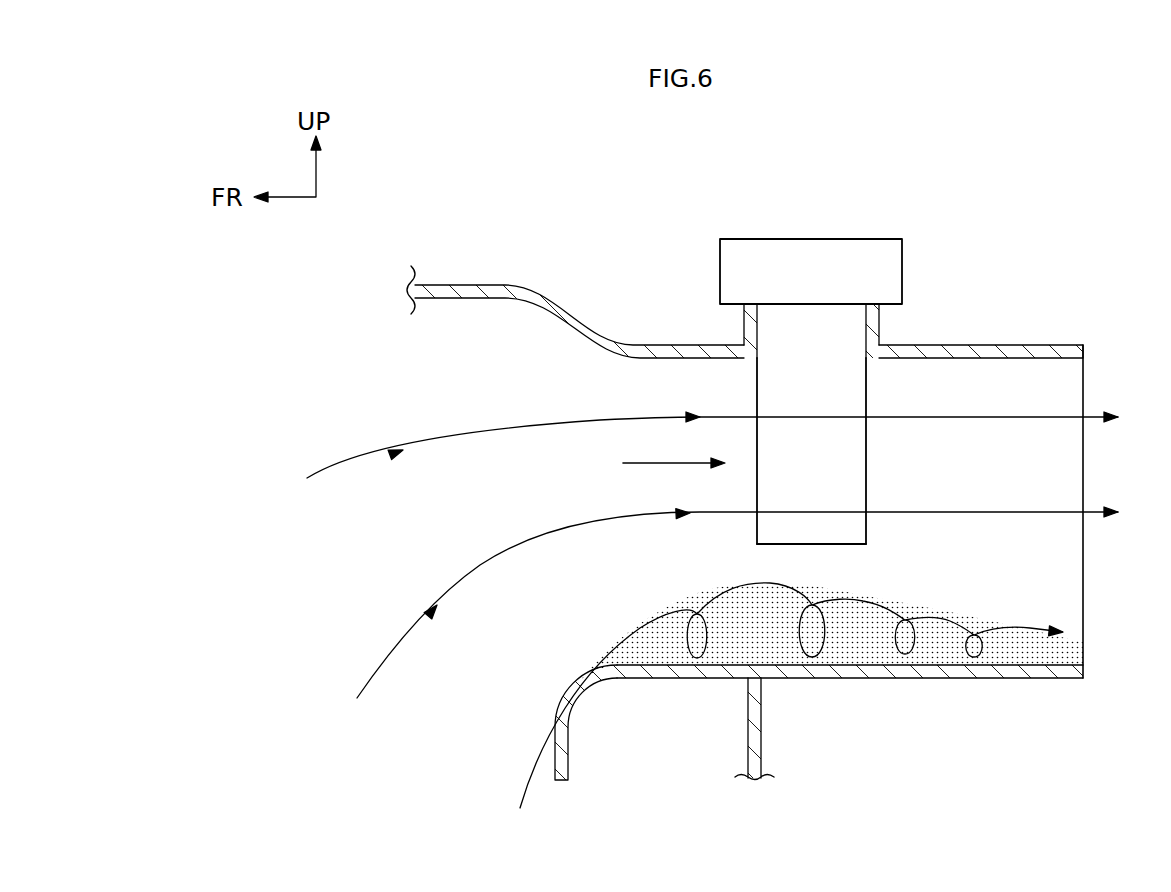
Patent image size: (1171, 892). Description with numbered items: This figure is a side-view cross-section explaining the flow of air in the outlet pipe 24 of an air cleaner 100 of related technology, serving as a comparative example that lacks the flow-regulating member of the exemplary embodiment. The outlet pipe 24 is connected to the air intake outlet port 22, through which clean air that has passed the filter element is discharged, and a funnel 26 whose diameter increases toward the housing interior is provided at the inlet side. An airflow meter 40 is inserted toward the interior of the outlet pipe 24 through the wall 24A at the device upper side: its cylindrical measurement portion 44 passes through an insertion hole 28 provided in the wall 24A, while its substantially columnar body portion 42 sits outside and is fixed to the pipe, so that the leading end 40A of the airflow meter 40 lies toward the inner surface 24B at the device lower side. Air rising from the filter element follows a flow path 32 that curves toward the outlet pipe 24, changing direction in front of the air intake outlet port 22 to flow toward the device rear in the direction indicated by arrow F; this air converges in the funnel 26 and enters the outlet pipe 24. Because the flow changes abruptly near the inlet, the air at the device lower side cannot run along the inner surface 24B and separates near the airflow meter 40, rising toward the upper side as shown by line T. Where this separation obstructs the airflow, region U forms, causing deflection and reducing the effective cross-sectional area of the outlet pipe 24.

The air cleaner 100 is at (1048, 215).
The air intake outlet port 22 is at (625, 348).
The outlet pipe 24 is at (985, 345).
The wall 24A is at (1066, 345).
The inner surface 24B is at (1030, 668).
The funnel 26 is at (547, 765).
The insertion hole 28 is at (750, 327).
The flow path 32 is at (390, 545).
The airflow meter 40 is at (813, 237).
The leading end 40A is at (830, 545).
The body portion 42 is at (865, 254).
The measurement portion 44 is at (835, 345).
The air flow direction F is at (672, 466).
The line T is at (825, 637).
The region U is at (877, 650).